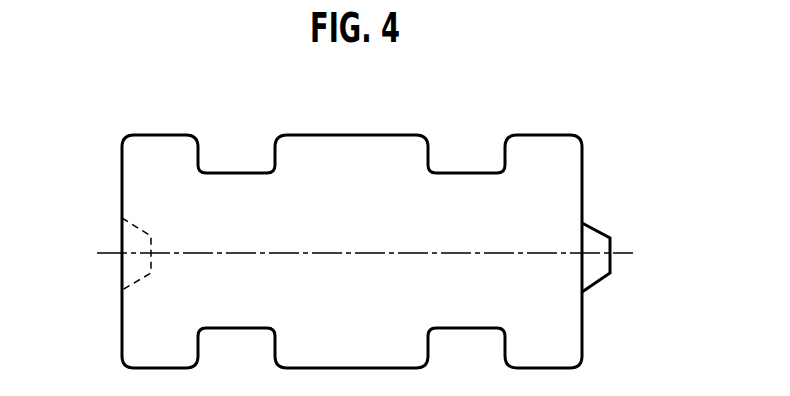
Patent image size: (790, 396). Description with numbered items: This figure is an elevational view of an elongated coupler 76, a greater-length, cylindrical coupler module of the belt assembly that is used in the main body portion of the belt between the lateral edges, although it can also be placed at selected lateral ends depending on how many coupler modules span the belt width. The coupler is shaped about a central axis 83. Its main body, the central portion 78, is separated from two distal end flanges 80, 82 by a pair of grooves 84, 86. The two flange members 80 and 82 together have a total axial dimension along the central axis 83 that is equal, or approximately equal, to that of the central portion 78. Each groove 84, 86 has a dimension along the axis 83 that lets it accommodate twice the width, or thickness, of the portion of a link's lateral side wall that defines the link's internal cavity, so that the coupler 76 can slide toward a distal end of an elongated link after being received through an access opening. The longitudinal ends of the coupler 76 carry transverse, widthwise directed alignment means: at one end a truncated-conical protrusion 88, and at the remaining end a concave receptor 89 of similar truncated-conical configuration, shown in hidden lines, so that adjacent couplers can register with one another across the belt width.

The elongated coupler 76 is at (604, 148).
The central portion 78 is at (350, 150).
The distal end flange 80 is at (160, 143).
The distal end flange 82 is at (538, 167).
The central axis 83 is at (622, 248).
The groove 84 is at (238, 182).
The groove 86 is at (461, 185).
The truncated-conical protrusion 88 is at (610, 272).
The concave receptor 89 is at (122, 282).